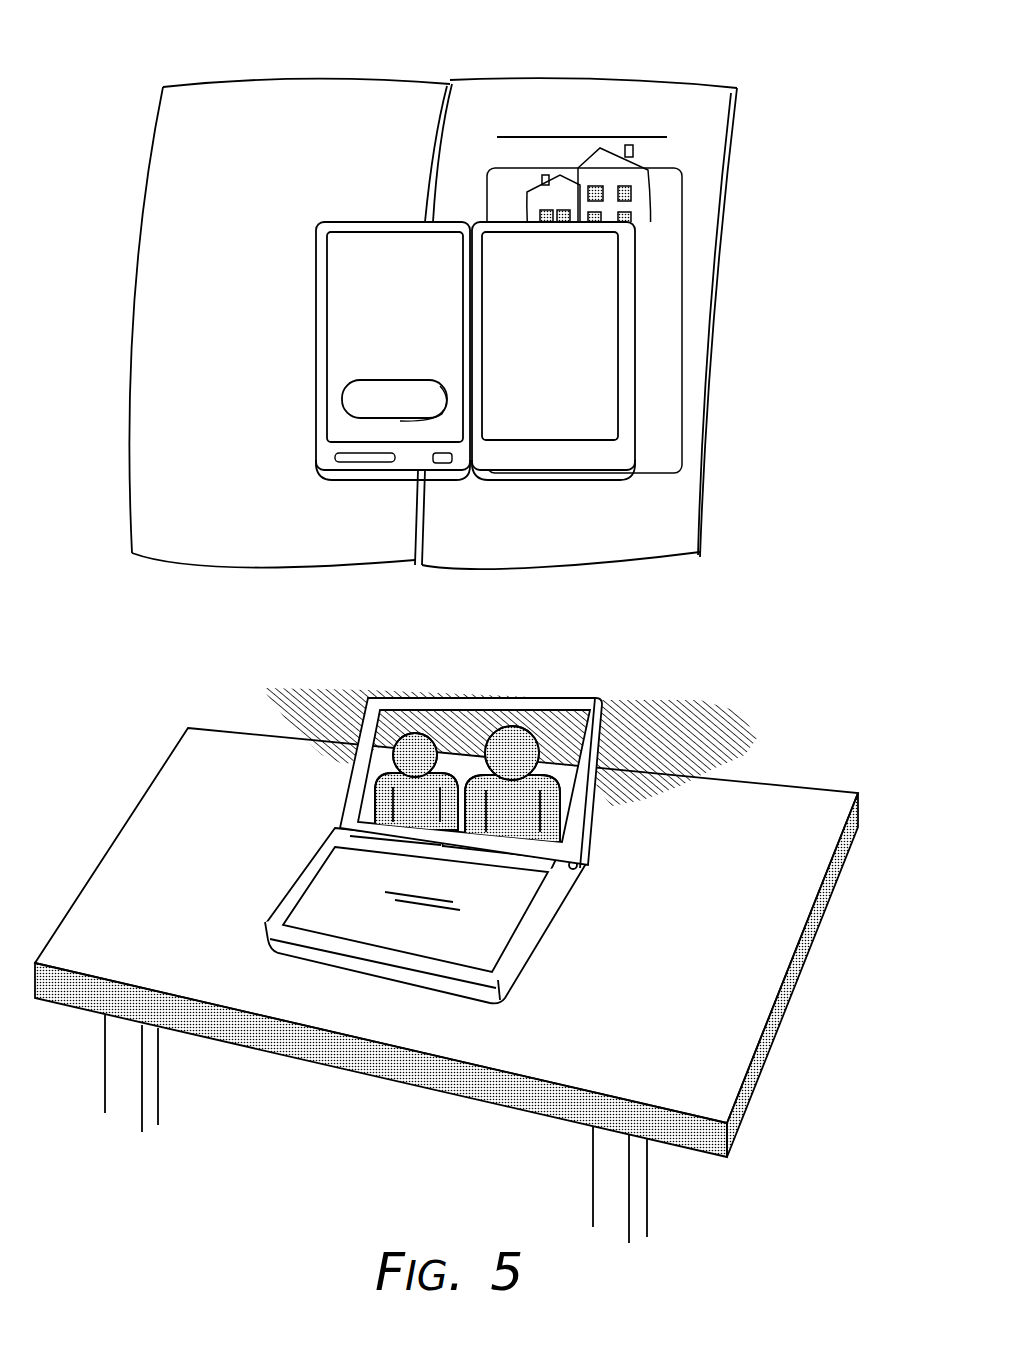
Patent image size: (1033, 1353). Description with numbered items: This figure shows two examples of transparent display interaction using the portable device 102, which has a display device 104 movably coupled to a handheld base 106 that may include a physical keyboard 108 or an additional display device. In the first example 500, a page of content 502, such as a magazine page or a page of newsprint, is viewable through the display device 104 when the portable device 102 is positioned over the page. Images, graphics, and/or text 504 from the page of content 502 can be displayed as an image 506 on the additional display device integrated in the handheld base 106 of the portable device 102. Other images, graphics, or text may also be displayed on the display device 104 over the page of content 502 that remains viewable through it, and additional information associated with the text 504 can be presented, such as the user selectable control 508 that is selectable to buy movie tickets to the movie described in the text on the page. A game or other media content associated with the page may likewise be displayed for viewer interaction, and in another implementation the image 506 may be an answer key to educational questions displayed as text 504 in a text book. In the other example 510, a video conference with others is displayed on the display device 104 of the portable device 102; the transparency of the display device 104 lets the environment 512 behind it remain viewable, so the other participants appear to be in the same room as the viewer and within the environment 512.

The first example 500 is at (757, 65).
The page of content 502 is at (697, 193).
The text 504 is at (668, 352).
The image 506 is at (362, 242).
The user selectable control 508 is at (343, 397).
The portable device 102 is at (492, 495).
The display device 104 is at (565, 473).
The handheld base 106 is at (410, 473).
The physical keyboard 108 is at (345, 427).
The another example 510 is at (760, 687).
The environment 512 is at (315, 782).